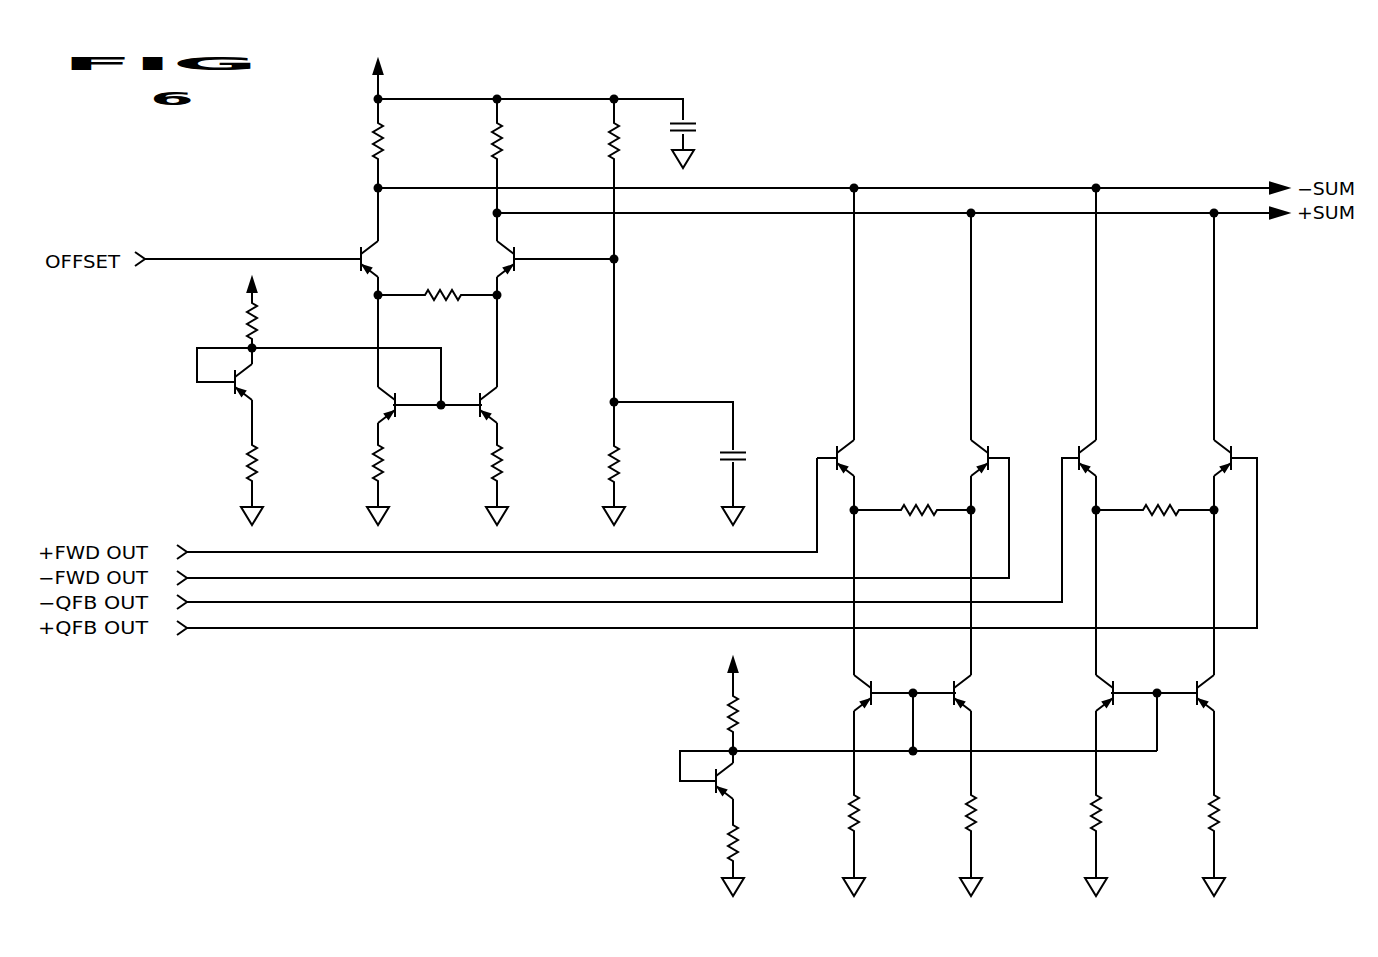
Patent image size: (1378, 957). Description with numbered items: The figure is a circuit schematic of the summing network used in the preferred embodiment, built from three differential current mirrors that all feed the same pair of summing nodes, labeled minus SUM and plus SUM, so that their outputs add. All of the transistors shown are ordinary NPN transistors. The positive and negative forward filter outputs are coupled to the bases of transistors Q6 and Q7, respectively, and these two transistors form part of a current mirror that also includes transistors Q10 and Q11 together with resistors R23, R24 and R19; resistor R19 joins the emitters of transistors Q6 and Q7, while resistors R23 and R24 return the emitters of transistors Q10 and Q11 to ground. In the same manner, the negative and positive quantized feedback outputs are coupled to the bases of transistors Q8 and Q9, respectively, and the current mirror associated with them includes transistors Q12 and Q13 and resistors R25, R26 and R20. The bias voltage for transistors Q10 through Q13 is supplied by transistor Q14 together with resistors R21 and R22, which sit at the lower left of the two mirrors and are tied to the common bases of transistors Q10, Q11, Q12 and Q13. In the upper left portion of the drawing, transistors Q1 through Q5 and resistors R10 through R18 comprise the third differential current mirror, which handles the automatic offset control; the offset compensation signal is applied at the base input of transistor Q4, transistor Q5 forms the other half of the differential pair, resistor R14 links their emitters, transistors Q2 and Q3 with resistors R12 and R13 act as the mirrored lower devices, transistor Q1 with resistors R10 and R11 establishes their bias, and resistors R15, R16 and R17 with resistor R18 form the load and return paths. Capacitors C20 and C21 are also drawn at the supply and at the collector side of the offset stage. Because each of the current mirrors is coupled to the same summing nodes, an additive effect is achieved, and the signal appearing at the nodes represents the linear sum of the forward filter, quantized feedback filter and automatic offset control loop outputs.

The resistor R10 is at (274, 321).
The resistor R11 is at (274, 463).
The resistor R12 is at (400, 463).
The resistor R13 is at (517, 463).
The resistor R14 is at (443, 307).
The resistor R15 is at (399, 141).
The resistor R16 is at (517, 141).
The resistor R17 is at (595, 141).
The resistor R18 is at (635, 464).
The resistor R19 is at (920, 523).
The resistor R20 is at (1165, 523).
The resistor R21 is at (754, 714).
The resistor R22 is at (755, 843).
The resistor R23 is at (873, 813).
The resistor R24 is at (992, 813).
The resistor R25 is at (1116, 813).
The resistor R26 is at (1235, 813).
The capacitor C20 is at (708, 129).
The capacitor C21 is at (749, 443).
The transistor Q1 is at (259, 382).
The transistor Q2 is at (368, 405).
The transistor Q3 is at (504, 405).
The transistor Q4 is at (385, 259).
The transistor Q5 is at (488, 259).
The transistor Q6 is at (863, 458).
The transistor Q7 is at (964, 458).
The transistor Q8 is at (1104, 458).
The transistor Q9 is at (1205, 458).
The transistor Q10 is at (839, 693).
The transistor Q11 is at (984, 693).
The transistor Q12 is at (1084, 693).
The transistor Q13 is at (1226, 693).
The transistor Q14 is at (746, 781).